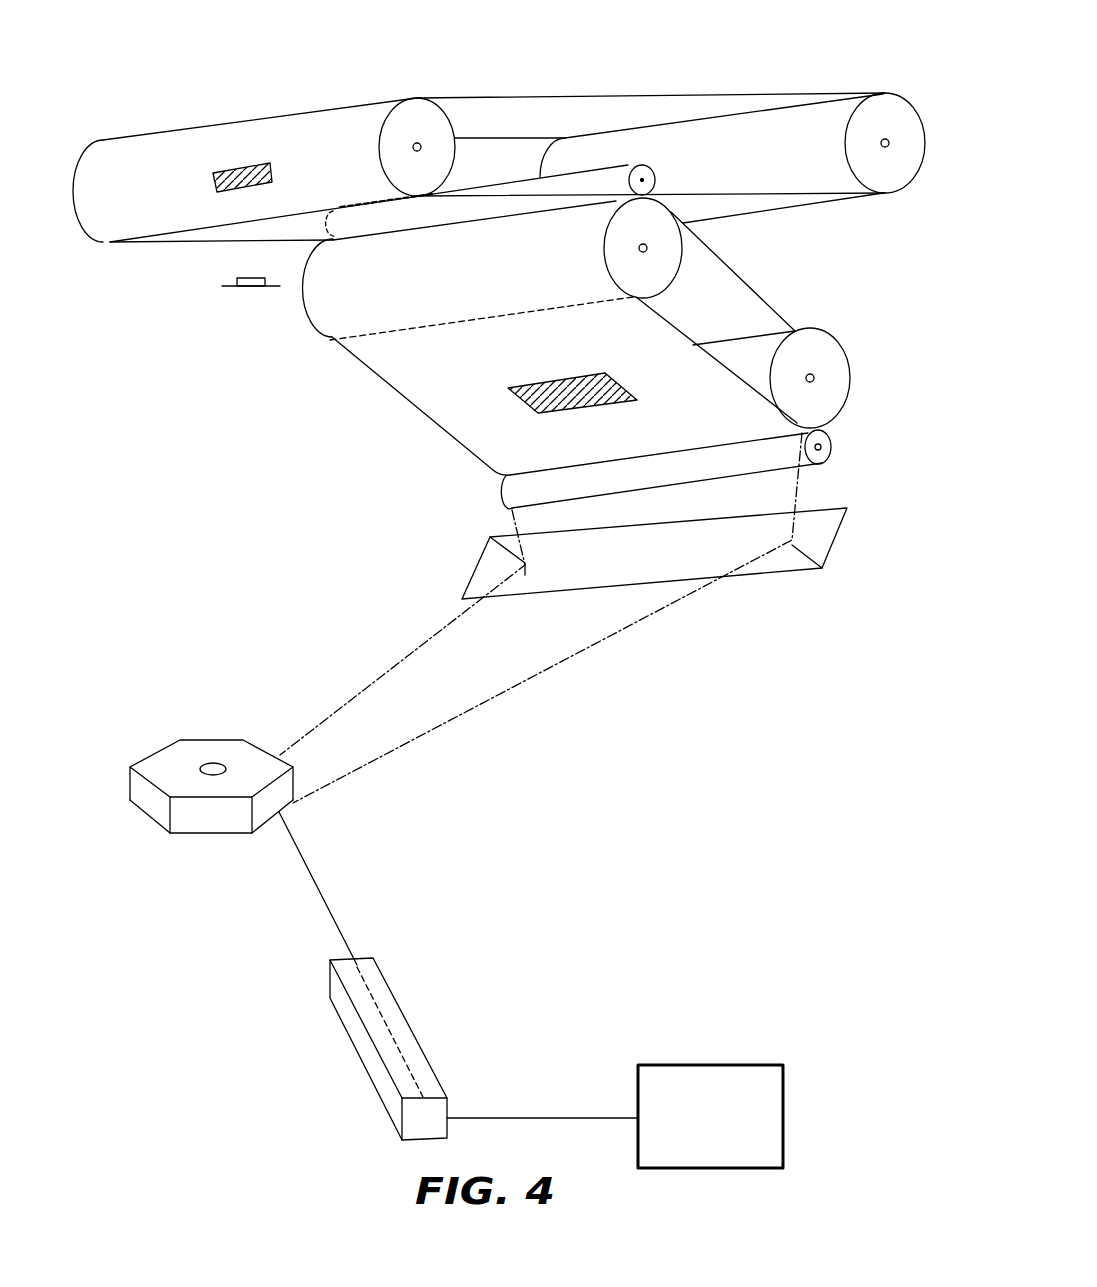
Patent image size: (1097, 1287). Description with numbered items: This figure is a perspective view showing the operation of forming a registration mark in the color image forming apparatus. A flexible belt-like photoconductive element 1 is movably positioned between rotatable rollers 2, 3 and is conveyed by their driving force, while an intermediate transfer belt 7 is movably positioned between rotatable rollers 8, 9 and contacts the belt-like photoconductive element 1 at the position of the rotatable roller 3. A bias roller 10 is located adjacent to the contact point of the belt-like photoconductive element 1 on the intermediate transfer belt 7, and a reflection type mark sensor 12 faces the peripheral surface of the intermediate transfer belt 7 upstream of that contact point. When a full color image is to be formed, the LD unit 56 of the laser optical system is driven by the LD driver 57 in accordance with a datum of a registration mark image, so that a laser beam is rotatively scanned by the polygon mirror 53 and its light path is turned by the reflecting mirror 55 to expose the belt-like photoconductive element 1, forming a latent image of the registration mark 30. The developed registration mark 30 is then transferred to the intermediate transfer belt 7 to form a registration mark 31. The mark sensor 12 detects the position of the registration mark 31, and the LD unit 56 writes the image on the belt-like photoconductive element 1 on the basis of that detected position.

The belt-like photoconductive element 1 is at (763, 287).
The rotatable roller 2 is at (835, 378).
The rotatable roller 3 is at (612, 250).
The intermediate transfer belt 7 is at (578, 95).
The rotatable roller 8 is at (415, 108).
The rotatable roller 9 is at (905, 177).
The bias roller 10 is at (538, 187).
The mark sensor 12 is at (251, 298).
The registration mark 30 is at (568, 390).
The registration mark 31 is at (213, 177).
The polygon mirror 53 is at (205, 745).
The reflecting mirror 55 is at (828, 540).
The LD unit 56 is at (392, 1003).
The LD driver 57 is at (748, 1073).